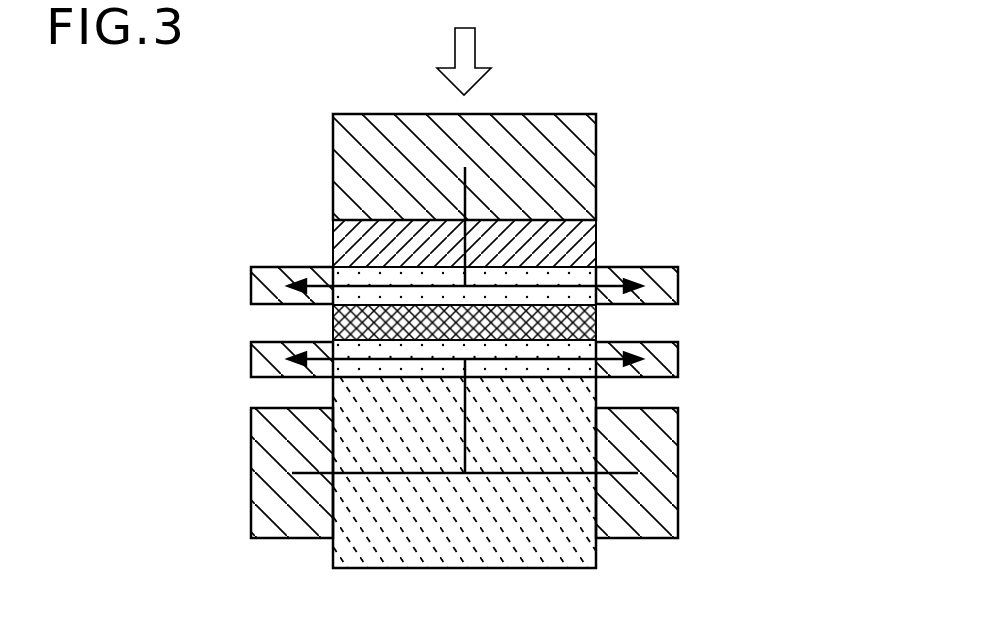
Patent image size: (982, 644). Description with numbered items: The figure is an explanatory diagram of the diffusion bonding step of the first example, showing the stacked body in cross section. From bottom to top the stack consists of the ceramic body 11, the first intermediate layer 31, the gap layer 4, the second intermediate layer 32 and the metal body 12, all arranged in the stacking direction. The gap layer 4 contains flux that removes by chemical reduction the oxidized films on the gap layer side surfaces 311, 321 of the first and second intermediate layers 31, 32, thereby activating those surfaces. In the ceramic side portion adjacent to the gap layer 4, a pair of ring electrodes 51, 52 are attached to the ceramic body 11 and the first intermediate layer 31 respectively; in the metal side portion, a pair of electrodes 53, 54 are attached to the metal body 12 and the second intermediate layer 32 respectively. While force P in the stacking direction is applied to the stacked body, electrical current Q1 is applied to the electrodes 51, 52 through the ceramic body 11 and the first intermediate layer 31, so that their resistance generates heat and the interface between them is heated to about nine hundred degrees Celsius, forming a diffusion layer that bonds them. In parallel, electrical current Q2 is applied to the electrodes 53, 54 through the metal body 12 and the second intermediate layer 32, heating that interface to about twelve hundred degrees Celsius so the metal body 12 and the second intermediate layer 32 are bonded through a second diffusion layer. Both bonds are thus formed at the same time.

The electrode 53 is at (389, 135).
The force P is at (467, 47).
The metal body 12 is at (570, 242).
The second intermediate layer 32 is at (358, 275).
The gap layer side surface 321 is at (333, 318).
The gap layer side surface 311 is at (333, 325).
The gap layer 4 is at (593, 327).
The first intermediate layer 31 is at (558, 380).
The ceramic body 11 is at (460, 547).
The electrode 54 is at (262, 292).
The electrode 52 is at (263, 363).
The electrode 51 is at (262, 496).
The electrical current Q2 is at (467, 181).
The electrical current Q1 is at (620, 473).